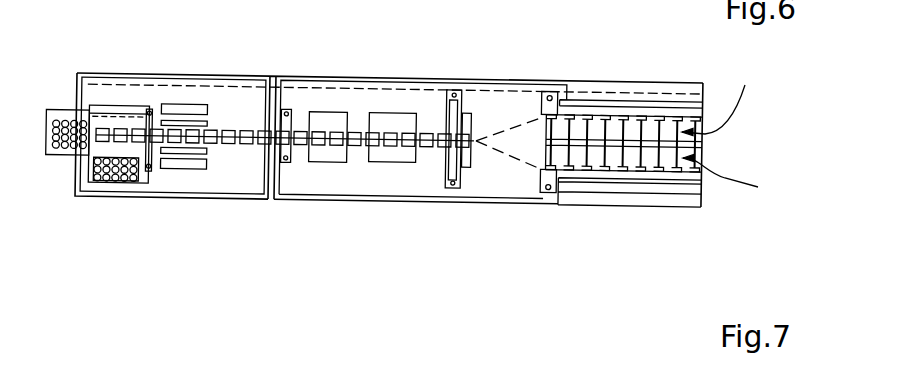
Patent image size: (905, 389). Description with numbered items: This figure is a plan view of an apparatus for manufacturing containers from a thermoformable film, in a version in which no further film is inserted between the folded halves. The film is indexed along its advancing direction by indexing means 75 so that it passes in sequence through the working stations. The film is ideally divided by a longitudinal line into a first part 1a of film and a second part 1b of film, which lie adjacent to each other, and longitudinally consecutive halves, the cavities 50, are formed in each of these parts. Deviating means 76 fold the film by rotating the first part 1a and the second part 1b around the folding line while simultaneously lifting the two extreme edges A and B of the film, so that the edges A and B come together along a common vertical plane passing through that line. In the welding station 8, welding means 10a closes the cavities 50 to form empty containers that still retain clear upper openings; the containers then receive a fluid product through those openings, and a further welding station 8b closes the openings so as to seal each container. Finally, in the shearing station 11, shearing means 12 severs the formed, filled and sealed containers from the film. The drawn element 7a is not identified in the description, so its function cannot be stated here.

The shearing station 11 is at (181, 205).
The shearing means 12 is at (184, 108).
The welding station 8 is at (402, 212).
The further welding station 8b is at (323, 113).
The conveyor unit 7a is at (393, 120).
The welding means 10a is at (453, 110).
The deviating means 76 is at (515, 125).
The indexing means 75 is at (577, 106).
The cavities 50 is at (597, 132).
The extreme edge of the film B is at (668, 114).
The extreme edge of the film A is at (680, 170).
The second part of film 1b is at (728, 96).
The first part of film 1a is at (737, 178).